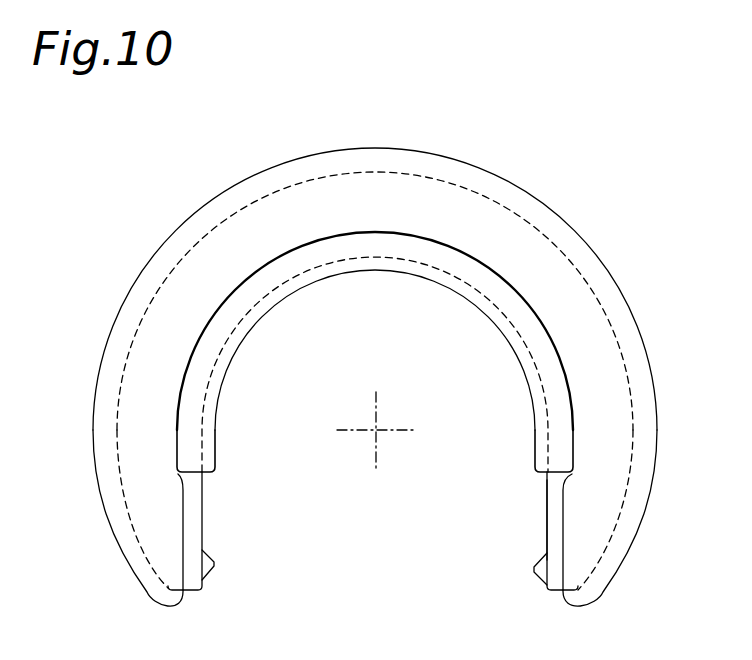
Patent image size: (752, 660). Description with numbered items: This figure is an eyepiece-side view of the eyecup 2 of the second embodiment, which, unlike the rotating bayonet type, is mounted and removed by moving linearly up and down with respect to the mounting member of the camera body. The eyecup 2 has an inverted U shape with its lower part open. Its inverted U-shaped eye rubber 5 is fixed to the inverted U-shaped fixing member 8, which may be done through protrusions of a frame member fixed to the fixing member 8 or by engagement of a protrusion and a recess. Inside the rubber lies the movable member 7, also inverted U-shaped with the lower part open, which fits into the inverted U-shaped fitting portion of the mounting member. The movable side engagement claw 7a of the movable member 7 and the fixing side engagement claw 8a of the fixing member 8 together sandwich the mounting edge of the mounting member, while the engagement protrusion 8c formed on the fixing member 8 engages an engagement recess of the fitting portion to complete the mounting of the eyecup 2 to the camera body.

The eyecup 2 is at (580, 237).
The eye rubber 5 is at (623, 407).
The movable member 7 is at (375, 352).
The movable side engagement claw 7a is at (497, 327).
The fixing member 8 is at (521, 546).
The fixing side engagement claw 8a is at (552, 502).
The engagement protrusion 8c is at (534, 569).